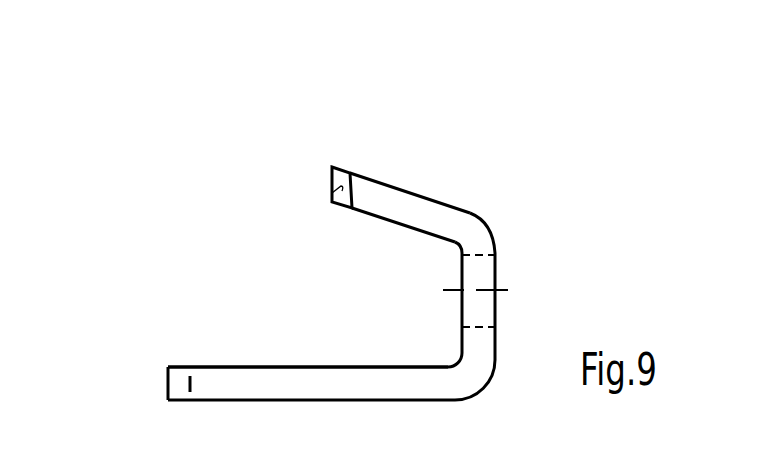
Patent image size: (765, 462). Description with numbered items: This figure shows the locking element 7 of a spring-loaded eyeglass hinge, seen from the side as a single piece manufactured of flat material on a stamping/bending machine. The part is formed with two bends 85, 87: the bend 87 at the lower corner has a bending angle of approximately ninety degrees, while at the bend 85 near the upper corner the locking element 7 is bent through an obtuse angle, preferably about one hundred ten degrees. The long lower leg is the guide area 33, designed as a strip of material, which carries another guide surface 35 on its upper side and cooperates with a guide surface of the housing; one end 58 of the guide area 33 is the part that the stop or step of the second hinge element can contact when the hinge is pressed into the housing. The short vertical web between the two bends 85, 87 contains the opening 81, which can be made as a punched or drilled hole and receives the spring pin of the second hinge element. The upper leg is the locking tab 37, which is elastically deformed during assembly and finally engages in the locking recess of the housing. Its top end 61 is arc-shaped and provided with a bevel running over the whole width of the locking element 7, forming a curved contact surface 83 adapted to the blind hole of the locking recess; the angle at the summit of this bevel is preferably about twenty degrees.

The locking element 7 is at (190, 223).
The top end 61 is at (332, 167).
The contact surface 83 is at (332, 193).
The locking tab 37 is at (407, 212).
The bend 85 is at (480, 233).
The opening 81 is at (480, 273).
The bend 87 is at (475, 382).
The guide area 33 is at (307, 387).
The guide surface 35 is at (236, 360).
The end 58 is at (167, 387).